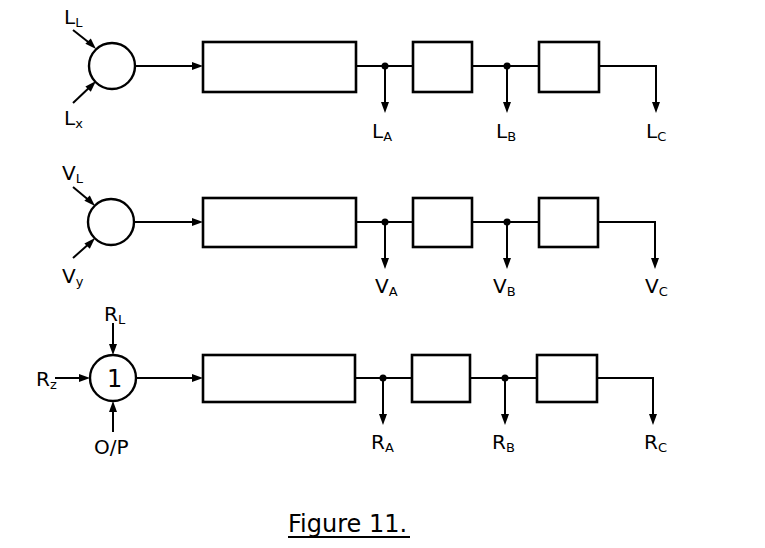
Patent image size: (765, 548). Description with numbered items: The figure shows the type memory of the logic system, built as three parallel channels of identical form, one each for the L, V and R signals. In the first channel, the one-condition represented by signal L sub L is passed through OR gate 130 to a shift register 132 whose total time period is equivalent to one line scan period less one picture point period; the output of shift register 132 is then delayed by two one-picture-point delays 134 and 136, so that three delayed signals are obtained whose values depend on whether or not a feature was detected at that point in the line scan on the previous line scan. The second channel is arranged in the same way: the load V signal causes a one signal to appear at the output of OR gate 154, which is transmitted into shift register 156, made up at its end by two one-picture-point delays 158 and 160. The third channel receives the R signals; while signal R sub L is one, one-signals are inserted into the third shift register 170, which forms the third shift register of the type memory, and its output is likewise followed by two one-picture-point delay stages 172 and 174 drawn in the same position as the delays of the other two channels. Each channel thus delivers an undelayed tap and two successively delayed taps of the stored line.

The OR gate 130 is at (120, 44).
The shift register 132 is at (258, 42).
The 1-picture point delay 134 is at (445, 26).
The 1-picture point delay 136 is at (572, 26).
The OR gate 154 is at (128, 188).
The shift register 156 is at (265, 188).
The one picture point delay 158 is at (441, 188).
The one picture point delay 160 is at (569, 188).
The third shift register 170 is at (262, 355).
The Ipp filter stage 172 is at (430, 355).
The Ipp filter stage 174 is at (566, 342).